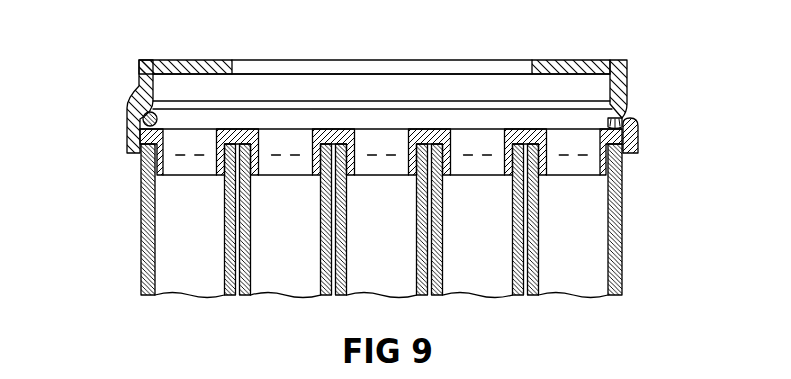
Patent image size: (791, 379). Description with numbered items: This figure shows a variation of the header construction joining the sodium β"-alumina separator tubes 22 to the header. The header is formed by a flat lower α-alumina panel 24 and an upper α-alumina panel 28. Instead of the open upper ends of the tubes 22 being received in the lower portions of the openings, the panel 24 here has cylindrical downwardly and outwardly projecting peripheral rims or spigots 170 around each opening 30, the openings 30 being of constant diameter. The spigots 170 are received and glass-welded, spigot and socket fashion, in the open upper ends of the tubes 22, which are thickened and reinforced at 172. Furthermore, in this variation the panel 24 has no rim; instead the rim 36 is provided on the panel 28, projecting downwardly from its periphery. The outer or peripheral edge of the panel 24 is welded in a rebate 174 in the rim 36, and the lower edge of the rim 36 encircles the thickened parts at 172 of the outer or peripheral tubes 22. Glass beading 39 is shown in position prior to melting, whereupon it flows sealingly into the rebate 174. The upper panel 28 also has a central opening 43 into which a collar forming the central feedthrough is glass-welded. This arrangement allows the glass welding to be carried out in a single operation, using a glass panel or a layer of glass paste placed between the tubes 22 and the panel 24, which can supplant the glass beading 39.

The sodium β"-alumina separator tube 22 is at (565, 310).
The α-alumina panel 24 is at (244, 129).
The α-alumina panel 28 is at (191, 64).
The opening 30 is at (414, 131).
The rim 36 is at (140, 93).
The glass beading 39 is at (608, 118).
The central opening 43 is at (232, 70).
The spigot 170 is at (185, 163).
The thickened part 172 is at (140, 170).
The rebate 174 is at (638, 137).